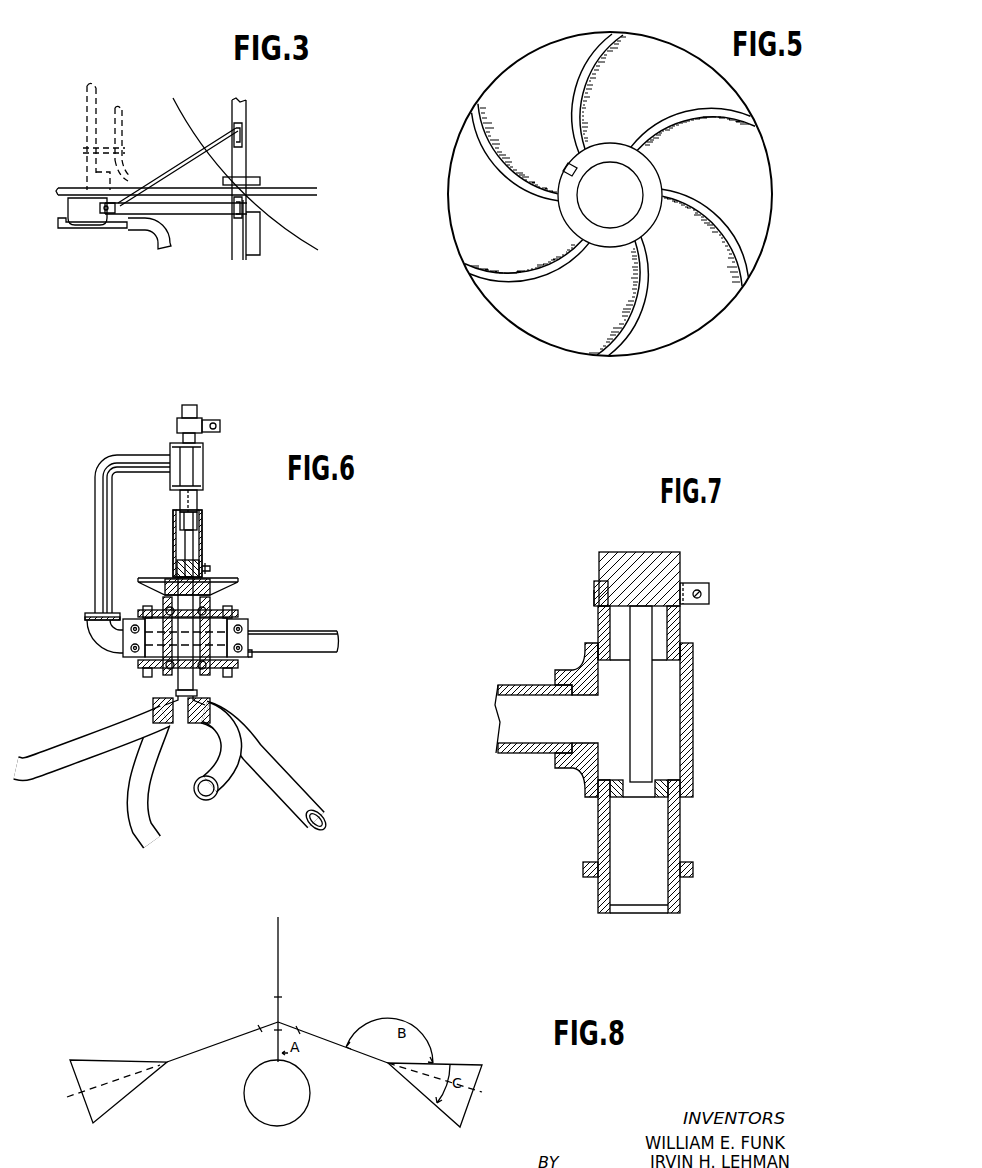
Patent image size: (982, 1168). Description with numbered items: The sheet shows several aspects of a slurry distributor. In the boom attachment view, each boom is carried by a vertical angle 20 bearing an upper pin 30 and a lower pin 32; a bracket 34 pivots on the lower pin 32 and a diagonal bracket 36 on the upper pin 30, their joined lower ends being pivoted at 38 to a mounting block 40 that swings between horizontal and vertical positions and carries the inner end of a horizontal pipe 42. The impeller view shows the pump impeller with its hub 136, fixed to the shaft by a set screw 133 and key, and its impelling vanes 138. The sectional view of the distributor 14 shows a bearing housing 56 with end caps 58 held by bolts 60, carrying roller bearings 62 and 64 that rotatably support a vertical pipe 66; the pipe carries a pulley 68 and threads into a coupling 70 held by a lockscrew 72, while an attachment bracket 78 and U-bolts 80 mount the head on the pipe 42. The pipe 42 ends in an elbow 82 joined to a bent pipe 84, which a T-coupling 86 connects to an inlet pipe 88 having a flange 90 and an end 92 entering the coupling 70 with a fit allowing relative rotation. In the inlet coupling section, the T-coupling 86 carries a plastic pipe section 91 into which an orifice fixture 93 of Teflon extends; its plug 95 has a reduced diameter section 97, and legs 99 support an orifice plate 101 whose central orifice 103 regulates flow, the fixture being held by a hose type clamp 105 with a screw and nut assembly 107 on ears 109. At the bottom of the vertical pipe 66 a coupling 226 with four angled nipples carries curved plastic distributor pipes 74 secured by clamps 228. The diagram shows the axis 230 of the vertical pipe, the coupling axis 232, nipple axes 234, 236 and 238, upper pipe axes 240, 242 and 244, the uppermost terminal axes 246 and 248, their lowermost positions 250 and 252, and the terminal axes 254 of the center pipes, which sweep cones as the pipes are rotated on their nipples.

In FIG. 3, the vertical angle 20 is at (247, 118).
In FIG. 3, the upper pin 30 is at (234, 126).
In FIG. 3, the lower pin 32 is at (250, 203).
In FIG. 3, the bracket 34 is at (190, 220).
In FIG. 3, the diagonal bracket 36 is at (180, 160).
In FIG. 3, the pivot 38 is at (113, 222).
In FIG. 3, the mounting block 40 is at (66, 210).
In FIG. 3, the pipe 42 is at (80, 232).
In FIG. 6, the pipe 42 is at (290, 632).
In FIG. 5, the set screw 133 is at (567, 165).
In FIG. 5, the hub 136 is at (665, 185).
In FIG. 5, the impelling vanes 138 is at (633, 268).
In FIG. 6, the distributor 14 is at (278, 595).
In FIG. 6, the bearing housing 56 is at (240, 630).
In FIG. 6, the end caps 58 is at (225, 612).
In FIG. 6, the bolts 60 is at (228, 668).
In FIG. 6, the roller bearing 62 is at (165, 677).
In FIG. 6, the roller bearing 64 is at (150, 612).
In FIG. 6, the vertical pipe 66 is at (185, 562).
In FIG. 6, the pulley 68 is at (170, 580).
In FIG. 6, the coupling 70 is at (203, 552).
In FIG. 6, the lockscrew 72 is at (207, 570).
In FIG. 6, the distributor pipes 74 is at (279, 751).
In FIG. 6, the attachment bracket 78 is at (250, 657).
In FIG. 6, the U-bolts 80 is at (123, 650).
In FIG. 6, the elbow 82 is at (90, 641).
In FIG. 6, the bent pipe 84 is at (95, 500).
In FIG. 7, the bent pipe 84 is at (527, 675).
In FIG. 6, the T-coupling 86 is at (203, 466).
In FIG. 7, the T-coupling 86 is at (693, 732).
In FIG. 6, the inlet pipe 88 is at (197, 500).
In FIG. 7, the inlet pipe 88 is at (680, 840).
In FIG. 6, the flange 90 is at (176, 512).
In FIG. 7, the flange 90 is at (693, 870).
In FIG. 6, the pipe section 91 is at (202, 432).
In FIG. 7, the pipe section 91 is at (680, 628).
In FIG. 6, the end 92 is at (198, 522).
In FIG. 7, the end 92 is at (672, 900).
In FIG. 7, the orifice fixture 93 is at (664, 701).
In FIG. 6, the plug 95 is at (197, 410).
In FIG. 7, the plug 95 is at (680, 562).
In FIG. 7, the reduced diameter section 97 is at (594, 600).
In FIG. 7, the legs 99 is at (630, 700).
In FIG. 7, the orifice plate 101 is at (660, 790).
In FIG. 7, the central orifice 103 is at (618, 790).
In FIG. 7, the hose type clamp 105 is at (596, 586).
In FIG. 7, the screw and nut assembly 107 is at (709, 592).
In FIG. 7, the ears 109 is at (709, 598).
In FIG. 6, the coupling 226 is at (187, 718).
In FIG. 6, the clamps 228 is at (143, 708).
In FIG. 8, the axis of the vertical pipe 230 is at (278, 944).
In FIG. 8, the axis of the vertical portion of the coupling 232 is at (280, 997).
In FIG. 8, the nipple axis 234 is at (268, 1028).
In FIG. 8, the nipple axis 236 is at (262, 1036).
In FIG. 8, the nipple axis 238 is at (290, 1022).
In FIG. 8, the upper pipe axis 240 is at (238, 1028).
In FIG. 8, the upper pipe axis 242 is at (282, 1060).
In FIG. 8, the upper pipe axis 244 is at (362, 1047).
In FIG. 8, the terminal axis 246 is at (96, 1060).
In FIG. 8, the terminal axis 248 is at (470, 1062).
In FIG. 8, the lowermost position 250 is at (113, 1108).
In FIG. 8, the lowermost position 252 is at (440, 1112).
In FIG. 8, the terminal axes of center discharge pipes 254 is at (276, 1070).